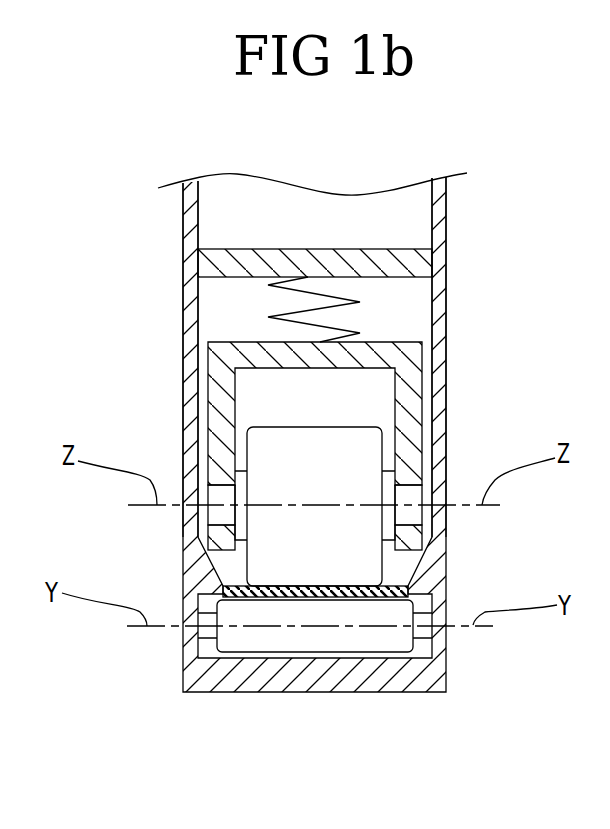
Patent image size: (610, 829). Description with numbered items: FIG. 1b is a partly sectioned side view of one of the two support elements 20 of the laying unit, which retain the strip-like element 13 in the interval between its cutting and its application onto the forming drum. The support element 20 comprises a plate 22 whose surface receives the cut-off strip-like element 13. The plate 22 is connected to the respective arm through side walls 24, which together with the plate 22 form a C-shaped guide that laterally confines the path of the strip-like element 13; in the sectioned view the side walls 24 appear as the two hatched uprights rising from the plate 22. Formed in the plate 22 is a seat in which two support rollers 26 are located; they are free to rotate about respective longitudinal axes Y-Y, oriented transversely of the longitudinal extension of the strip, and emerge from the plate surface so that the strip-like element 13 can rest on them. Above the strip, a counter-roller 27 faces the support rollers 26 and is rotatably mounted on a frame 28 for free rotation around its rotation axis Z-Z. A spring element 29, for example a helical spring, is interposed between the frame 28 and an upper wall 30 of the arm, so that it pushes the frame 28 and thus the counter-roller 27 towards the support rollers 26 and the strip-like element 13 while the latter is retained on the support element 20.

The support element 20 is at (307, 480).
The plate 22 is at (382, 677).
The side walls 24 is at (193, 410).
The support rollers 26 is at (257, 638).
The counter-roller 27 is at (335, 460).
The frame 28 is at (217, 358).
The spring element 29 is at (293, 312).
The upper wall 30 is at (386, 262).
The strip-like element 13 is at (343, 588).